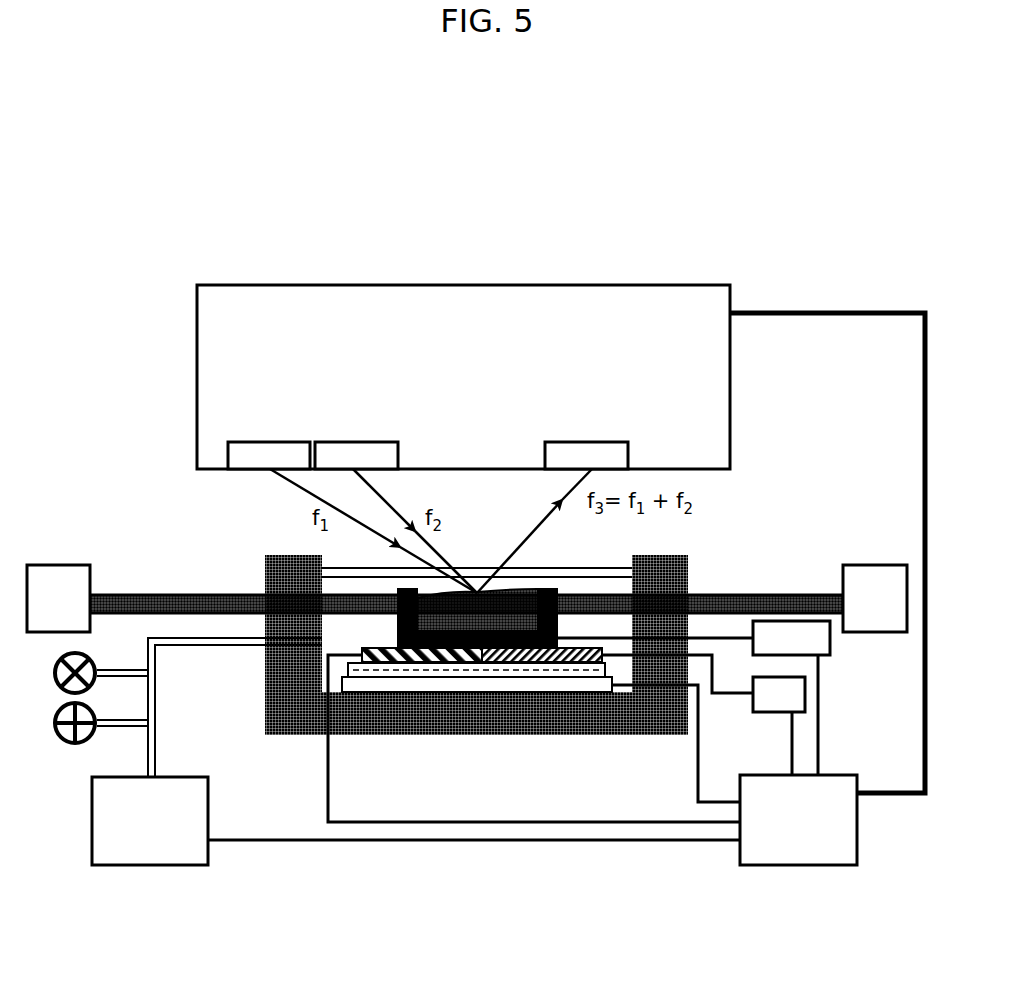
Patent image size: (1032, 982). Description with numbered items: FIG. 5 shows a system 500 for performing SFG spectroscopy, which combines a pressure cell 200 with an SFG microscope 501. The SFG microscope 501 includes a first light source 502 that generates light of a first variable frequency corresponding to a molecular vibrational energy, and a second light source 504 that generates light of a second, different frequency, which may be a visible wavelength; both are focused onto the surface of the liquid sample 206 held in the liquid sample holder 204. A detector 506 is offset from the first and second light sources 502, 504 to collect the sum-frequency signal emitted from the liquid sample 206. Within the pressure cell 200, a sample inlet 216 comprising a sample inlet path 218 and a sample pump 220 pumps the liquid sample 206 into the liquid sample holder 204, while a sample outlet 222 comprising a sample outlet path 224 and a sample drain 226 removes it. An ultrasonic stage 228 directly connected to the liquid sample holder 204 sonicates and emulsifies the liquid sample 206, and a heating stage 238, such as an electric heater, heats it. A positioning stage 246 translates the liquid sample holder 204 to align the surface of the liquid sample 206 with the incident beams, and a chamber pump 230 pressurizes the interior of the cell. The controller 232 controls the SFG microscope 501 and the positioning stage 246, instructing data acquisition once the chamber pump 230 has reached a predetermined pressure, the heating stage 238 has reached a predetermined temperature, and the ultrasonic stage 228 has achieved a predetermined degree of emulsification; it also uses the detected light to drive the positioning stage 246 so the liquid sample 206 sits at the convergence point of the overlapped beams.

The system 500 is at (238, 162).
The SFG microscope 501 is at (427, 285).
The first light source 502 is at (295, 442).
The second light source 504 is at (382, 442).
The detector 506 is at (613, 442).
The sample inlet 216 is at (130, 494).
The sample inlet path 218 is at (175, 594).
The sample pump 220 is at (80, 562).
The sample outlet 222 is at (800, 494).
The sample outlet path 224 is at (763, 594).
The sample drain 226 is at (856, 565).
The liquid sample holder 204 is at (553, 590).
The ultrasonic stage 228 is at (433, 663).
The heating stage 238 is at (565, 663).
The liquid sample 206 is at (513, 663).
The positioning stage 246 is at (378, 692).
The chamber pump 230 is at (188, 751).
The controller 232 is at (798, 820).
The pressure cell 200 is at (336, 866).